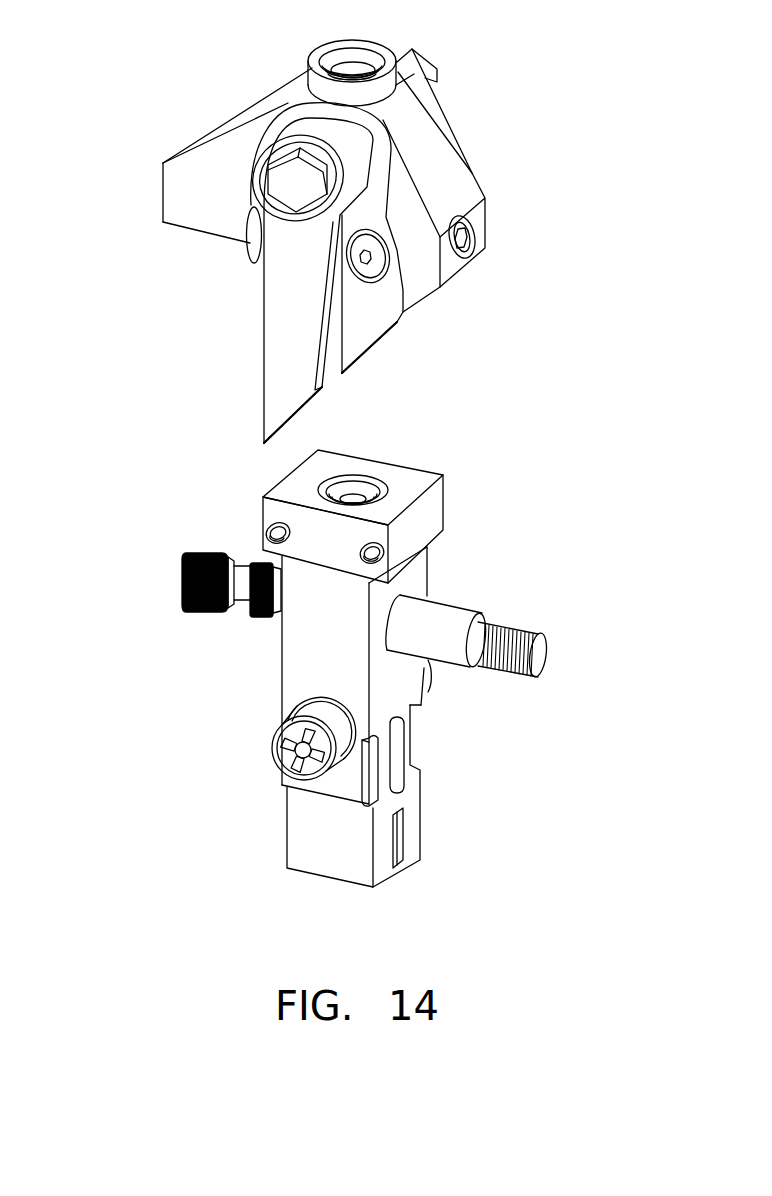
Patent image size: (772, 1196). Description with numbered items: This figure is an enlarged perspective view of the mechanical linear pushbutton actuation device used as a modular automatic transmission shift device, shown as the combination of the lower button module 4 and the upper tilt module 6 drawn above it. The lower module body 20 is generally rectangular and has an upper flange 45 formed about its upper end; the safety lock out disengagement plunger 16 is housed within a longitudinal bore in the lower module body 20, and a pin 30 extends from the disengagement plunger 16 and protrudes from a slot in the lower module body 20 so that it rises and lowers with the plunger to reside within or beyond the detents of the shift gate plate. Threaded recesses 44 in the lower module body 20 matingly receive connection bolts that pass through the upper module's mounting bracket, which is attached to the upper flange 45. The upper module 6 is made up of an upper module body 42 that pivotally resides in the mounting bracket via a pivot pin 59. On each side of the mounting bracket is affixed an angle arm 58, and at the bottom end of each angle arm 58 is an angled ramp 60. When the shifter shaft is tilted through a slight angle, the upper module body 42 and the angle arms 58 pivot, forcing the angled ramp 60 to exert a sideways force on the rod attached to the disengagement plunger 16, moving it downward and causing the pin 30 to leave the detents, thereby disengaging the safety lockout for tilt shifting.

The lower button module 4 is at (90, 781).
The upper tilt module 6 is at (600, 188).
The safety lock out disengagement plunger 16 is at (353, 500).
The lower module body 20 is at (299, 652).
The pin 30 is at (400, 842).
The upper module body 42 is at (205, 135).
The threaded recesses 44 is at (368, 568).
The upper flange 45 is at (430, 518).
The angle arm 58 is at (288, 313).
The pivot pin 59 is at (292, 184).
The angled ramp 60 is at (290, 412).